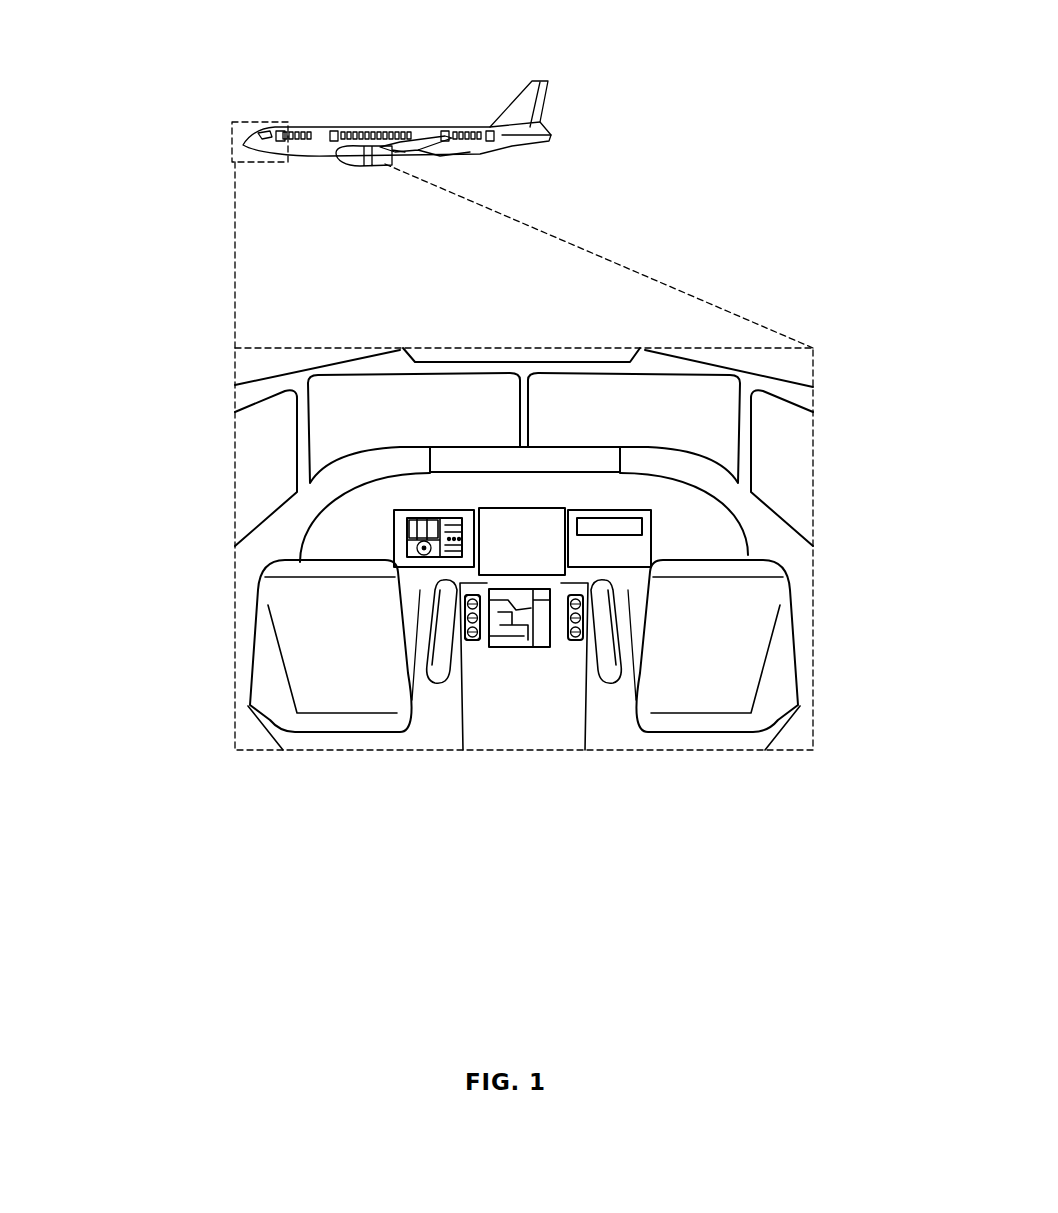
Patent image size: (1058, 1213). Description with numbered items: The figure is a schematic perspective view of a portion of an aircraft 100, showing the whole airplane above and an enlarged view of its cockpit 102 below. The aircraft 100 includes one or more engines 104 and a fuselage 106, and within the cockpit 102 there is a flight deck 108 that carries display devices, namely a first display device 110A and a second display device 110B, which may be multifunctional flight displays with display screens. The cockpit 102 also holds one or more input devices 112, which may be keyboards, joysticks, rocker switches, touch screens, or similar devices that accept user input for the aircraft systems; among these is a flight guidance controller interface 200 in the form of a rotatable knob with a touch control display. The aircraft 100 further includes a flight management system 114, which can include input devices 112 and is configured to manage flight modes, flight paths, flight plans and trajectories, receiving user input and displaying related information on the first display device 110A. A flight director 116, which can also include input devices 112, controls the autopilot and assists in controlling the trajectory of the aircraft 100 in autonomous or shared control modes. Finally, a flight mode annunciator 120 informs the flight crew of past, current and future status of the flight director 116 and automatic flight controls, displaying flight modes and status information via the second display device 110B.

The aircraft 100 is at (262, 95).
The cockpit 102 is at (290, 380).
The engines 104 is at (372, 167).
The fuselage 106 is at (310, 148).
The flight deck 108 is at (296, 535).
The first display device 110A is at (538, 530).
The second display device 110B is at (393, 540).
The input device 112 is at (481, 645).
The flight management system 114 is at (541, 628).
The flight director 116 is at (393, 558).
The flight mode annunciator 120 is at (430, 520).
The flight guidance controller interface 200 is at (472, 642).